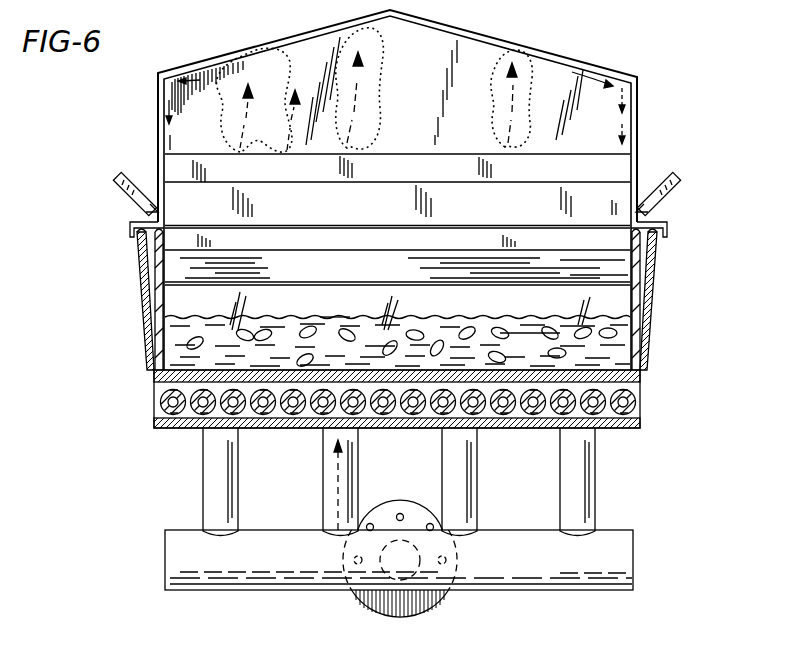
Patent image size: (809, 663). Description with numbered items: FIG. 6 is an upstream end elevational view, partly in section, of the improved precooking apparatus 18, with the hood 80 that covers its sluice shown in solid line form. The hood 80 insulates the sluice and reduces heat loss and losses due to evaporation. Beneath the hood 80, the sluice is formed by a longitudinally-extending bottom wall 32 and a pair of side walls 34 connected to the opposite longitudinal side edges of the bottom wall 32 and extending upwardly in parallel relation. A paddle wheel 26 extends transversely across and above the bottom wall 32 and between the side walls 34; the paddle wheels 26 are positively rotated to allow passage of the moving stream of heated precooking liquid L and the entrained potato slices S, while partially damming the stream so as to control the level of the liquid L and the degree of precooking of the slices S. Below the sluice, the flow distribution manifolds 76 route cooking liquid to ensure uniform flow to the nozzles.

The precooking apparatus 18 is at (657, 61).
The hood 80 is at (641, 107).
The paddle wheels 26 is at (613, 268).
The side walls 34 is at (146, 316).
The bottom wall 32 is at (160, 432).
The flow distribution manifolds 76 is at (634, 532).
The precooking liquid L is at (335, 330).
The potato slices S is at (583, 333).